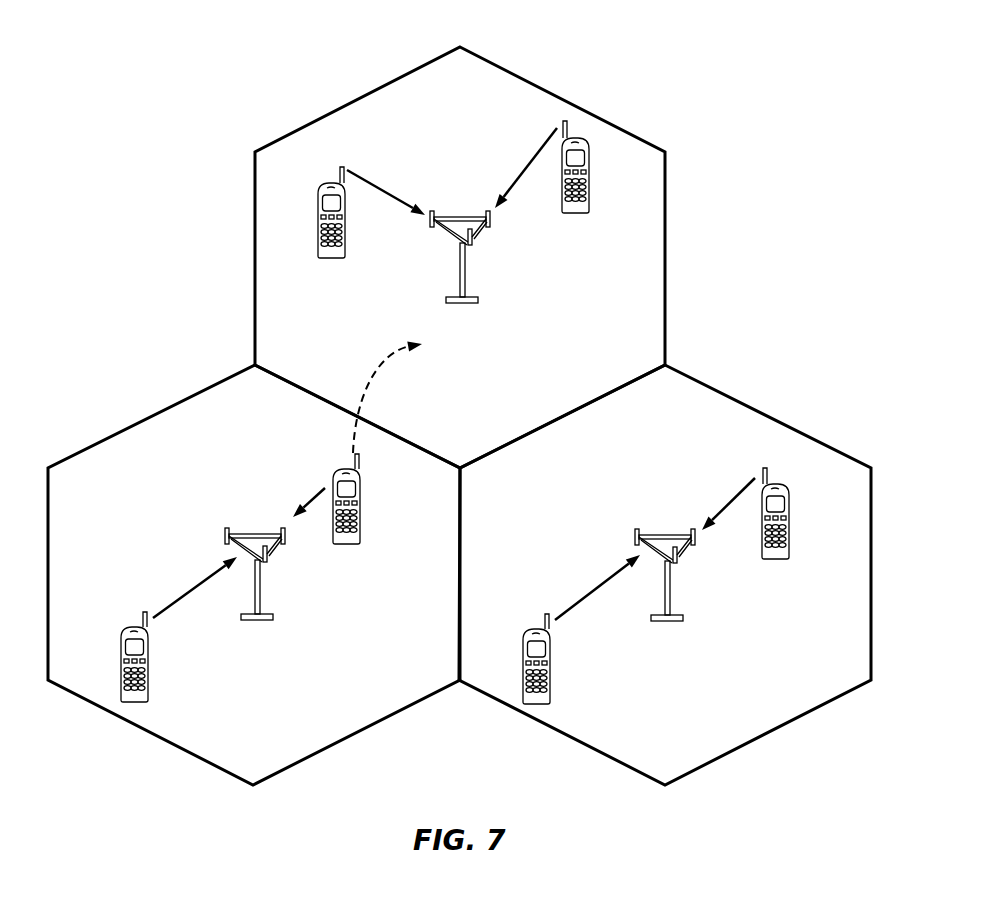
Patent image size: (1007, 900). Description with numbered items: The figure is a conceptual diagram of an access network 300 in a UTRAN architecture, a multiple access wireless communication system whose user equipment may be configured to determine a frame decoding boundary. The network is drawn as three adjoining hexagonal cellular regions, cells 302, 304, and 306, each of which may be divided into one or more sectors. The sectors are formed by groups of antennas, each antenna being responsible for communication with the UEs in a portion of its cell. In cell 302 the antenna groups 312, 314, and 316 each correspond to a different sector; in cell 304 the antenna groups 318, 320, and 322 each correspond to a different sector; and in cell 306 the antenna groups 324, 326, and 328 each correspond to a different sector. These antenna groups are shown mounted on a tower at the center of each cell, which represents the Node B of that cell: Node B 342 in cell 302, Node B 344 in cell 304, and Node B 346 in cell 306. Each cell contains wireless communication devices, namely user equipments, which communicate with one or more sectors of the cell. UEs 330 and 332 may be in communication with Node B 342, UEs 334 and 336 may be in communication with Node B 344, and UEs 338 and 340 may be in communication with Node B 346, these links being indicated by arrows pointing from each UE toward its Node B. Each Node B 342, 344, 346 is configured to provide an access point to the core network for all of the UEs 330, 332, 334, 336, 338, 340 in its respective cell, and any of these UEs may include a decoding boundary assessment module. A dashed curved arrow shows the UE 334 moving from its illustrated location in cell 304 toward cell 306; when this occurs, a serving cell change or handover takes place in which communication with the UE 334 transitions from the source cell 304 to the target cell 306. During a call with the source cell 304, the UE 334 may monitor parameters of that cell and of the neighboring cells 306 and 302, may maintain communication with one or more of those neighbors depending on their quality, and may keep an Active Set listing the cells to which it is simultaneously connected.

The access network 300 is at (787, 71).
The cell 302 is at (767, 415).
The cell 304 is at (128, 428).
The cell 306 is at (545, 88).
The antenna group 312 is at (608, 525).
The antenna group 314 is at (704, 572).
The antenna group 316 is at (722, 550).
The antenna group 318 is at (294, 571).
The antenna group 320 is at (312, 550).
The antenna group 322 is at (198, 524).
The antenna group 324 is at (403, 235).
The antenna group 326 is at (499, 254).
The antenna group 328 is at (517, 231).
The UE 330 is at (805, 513).
The UE 332 is at (508, 659).
The UE 334 is at (375, 499).
The UE 336 is at (106, 657).
The UE 338 is at (310, 228).
The UE 340 is at (601, 181).
The Node B 342 is at (665, 554).
The Node B 344 is at (255, 554).
The Node B 346 is at (460, 237).